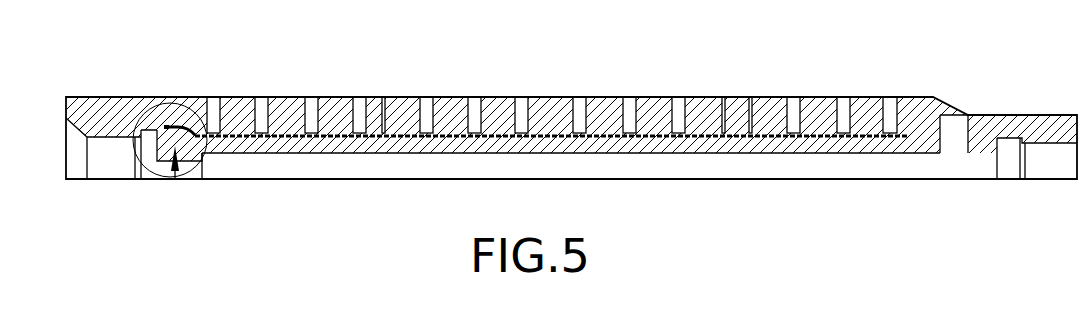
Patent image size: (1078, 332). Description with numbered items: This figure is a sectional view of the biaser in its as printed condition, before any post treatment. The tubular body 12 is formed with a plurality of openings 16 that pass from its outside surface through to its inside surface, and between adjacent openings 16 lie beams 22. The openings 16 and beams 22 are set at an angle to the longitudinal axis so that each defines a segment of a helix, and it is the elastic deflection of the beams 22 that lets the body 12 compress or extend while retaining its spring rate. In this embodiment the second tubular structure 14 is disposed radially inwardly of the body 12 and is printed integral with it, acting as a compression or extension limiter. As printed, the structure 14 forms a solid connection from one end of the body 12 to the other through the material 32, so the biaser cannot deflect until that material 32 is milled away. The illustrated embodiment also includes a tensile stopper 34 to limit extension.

The tubular body 12 is at (118, 132).
The second tubular structure 14 is at (382, 147).
The openings 16 is at (675, 107).
The beams 22 is at (703, 120).
The material 32 is at (175, 180).
The tensile stopper 34 is at (191, 130).